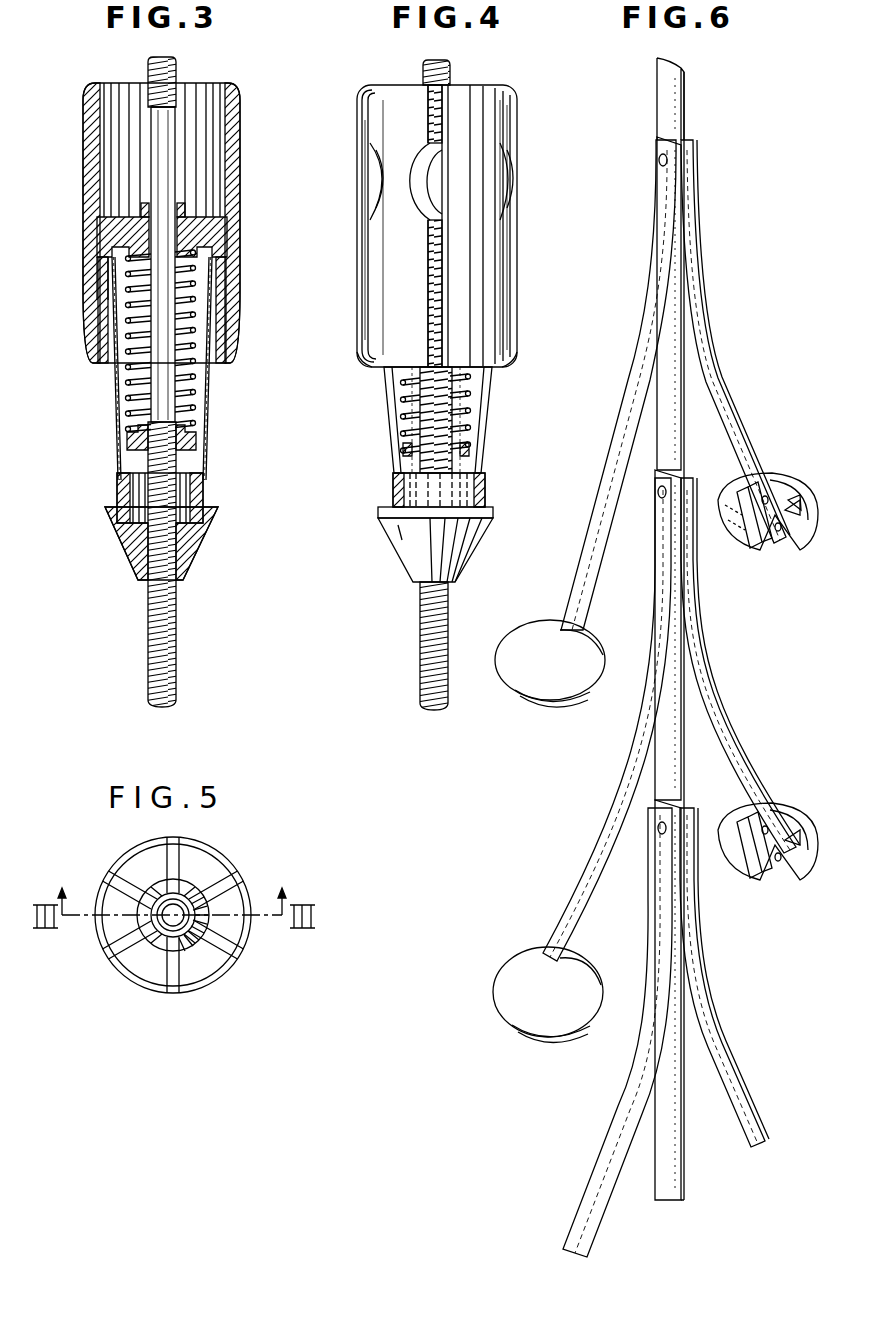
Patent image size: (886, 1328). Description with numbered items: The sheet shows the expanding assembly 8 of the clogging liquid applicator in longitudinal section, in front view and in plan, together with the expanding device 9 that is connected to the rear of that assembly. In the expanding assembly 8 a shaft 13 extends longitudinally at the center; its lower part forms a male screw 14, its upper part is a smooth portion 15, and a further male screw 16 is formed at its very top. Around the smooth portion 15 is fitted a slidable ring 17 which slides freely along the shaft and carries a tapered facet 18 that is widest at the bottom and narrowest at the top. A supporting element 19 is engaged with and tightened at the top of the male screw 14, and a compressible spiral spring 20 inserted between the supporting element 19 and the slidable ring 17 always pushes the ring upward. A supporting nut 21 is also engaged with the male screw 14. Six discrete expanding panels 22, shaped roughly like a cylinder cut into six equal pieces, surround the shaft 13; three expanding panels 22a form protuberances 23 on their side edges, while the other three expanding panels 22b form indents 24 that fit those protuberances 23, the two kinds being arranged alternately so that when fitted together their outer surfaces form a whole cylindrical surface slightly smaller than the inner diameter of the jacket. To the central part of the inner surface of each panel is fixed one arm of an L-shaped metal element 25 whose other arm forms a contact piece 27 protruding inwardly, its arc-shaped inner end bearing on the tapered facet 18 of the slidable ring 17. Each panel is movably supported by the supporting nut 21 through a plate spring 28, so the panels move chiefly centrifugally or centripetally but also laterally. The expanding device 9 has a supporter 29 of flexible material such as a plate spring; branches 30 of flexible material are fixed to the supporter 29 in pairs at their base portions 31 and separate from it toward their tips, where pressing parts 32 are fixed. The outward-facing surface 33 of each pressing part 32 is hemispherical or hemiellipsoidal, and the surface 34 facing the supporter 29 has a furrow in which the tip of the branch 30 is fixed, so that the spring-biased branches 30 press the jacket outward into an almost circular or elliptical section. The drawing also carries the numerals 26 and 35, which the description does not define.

In FIG. 3, the expanding assembly 8 is at (102, 79).
In FIG. 4, the expanding assembly 8 is at (377, 80).
In FIG. 5, the expanding assembly 8 is at (85, 863).
In FIG. 6, the expanding device 9 is at (706, 133).
In FIG. 3, the shaft 13 is at (174, 145).
In FIG. 4, the shaft 13 is at (421, 598).
In FIG. 5, the shaft 13 is at (165, 960).
In FIG. 3, the male screw 14 is at (174, 600).
In FIG. 4, the male screw 14 is at (420, 620).
In FIG. 3, the smooth portion 15 is at (167, 162).
In FIG. 3, the male screw 16 is at (164, 73).
In FIG. 4, the male screw 16 is at (446, 67).
In FIG. 3, the slidable ring 17 is at (136, 222).
In FIG. 5, the slidable ring 17 is at (140, 920).
In FIG. 3, the tapered facet 18 is at (195, 218).
In FIG. 3, the supporting element 19 is at (190, 442).
In FIG. 4, the supporting element 19 is at (472, 450).
In FIG. 3, the compressible spiral spring 20 is at (195, 382).
In FIG. 4, the compressible spiral spring 20 is at (470, 431).
In FIG. 3, the supporting nut 21 is at (192, 548).
In FIG. 4, the supporting nut 21 is at (407, 537).
In FIG. 3, the expanding panels 22 is at (92, 293).
In FIG. 4, the expanding panels 22a is at (362, 261).
In FIG. 5, the expanding panels 22a is at (218, 863).
In FIG. 4, the expanding panels 22b is at (382, 286).
In FIG. 5, the expanding panels 22b is at (240, 905).
In FIG. 4, the protuberances 23 is at (372, 177).
In FIG. 4, the indents 24 is at (383, 190).
In FIG. 3, the L-shaped metal element 25 is at (204, 219).
In FIG. 3, the inner sleeve 26 is at (100, 266).
In FIG. 3, the contact piece 27 is at (105, 222).
In FIG. 5, the contact piece 27 is at (128, 958).
In FIG. 3, the plate spring 28 is at (213, 420).
In FIG. 4, the plate spring 28 is at (486, 390).
In FIG. 6, the supporter 29 is at (662, 116).
In FIG. 6, the branches 30 is at (633, 415).
In FIG. 6, the base portions 31 is at (660, 168).
In FIG. 6, the pressing parts 32 is at (802, 495).
In FIG. 6, the surface 33 is at (801, 480).
In FIG. 6, the surface 34 is at (742, 522).
In FIG. 6, the wedge face 35 is at (749, 481).